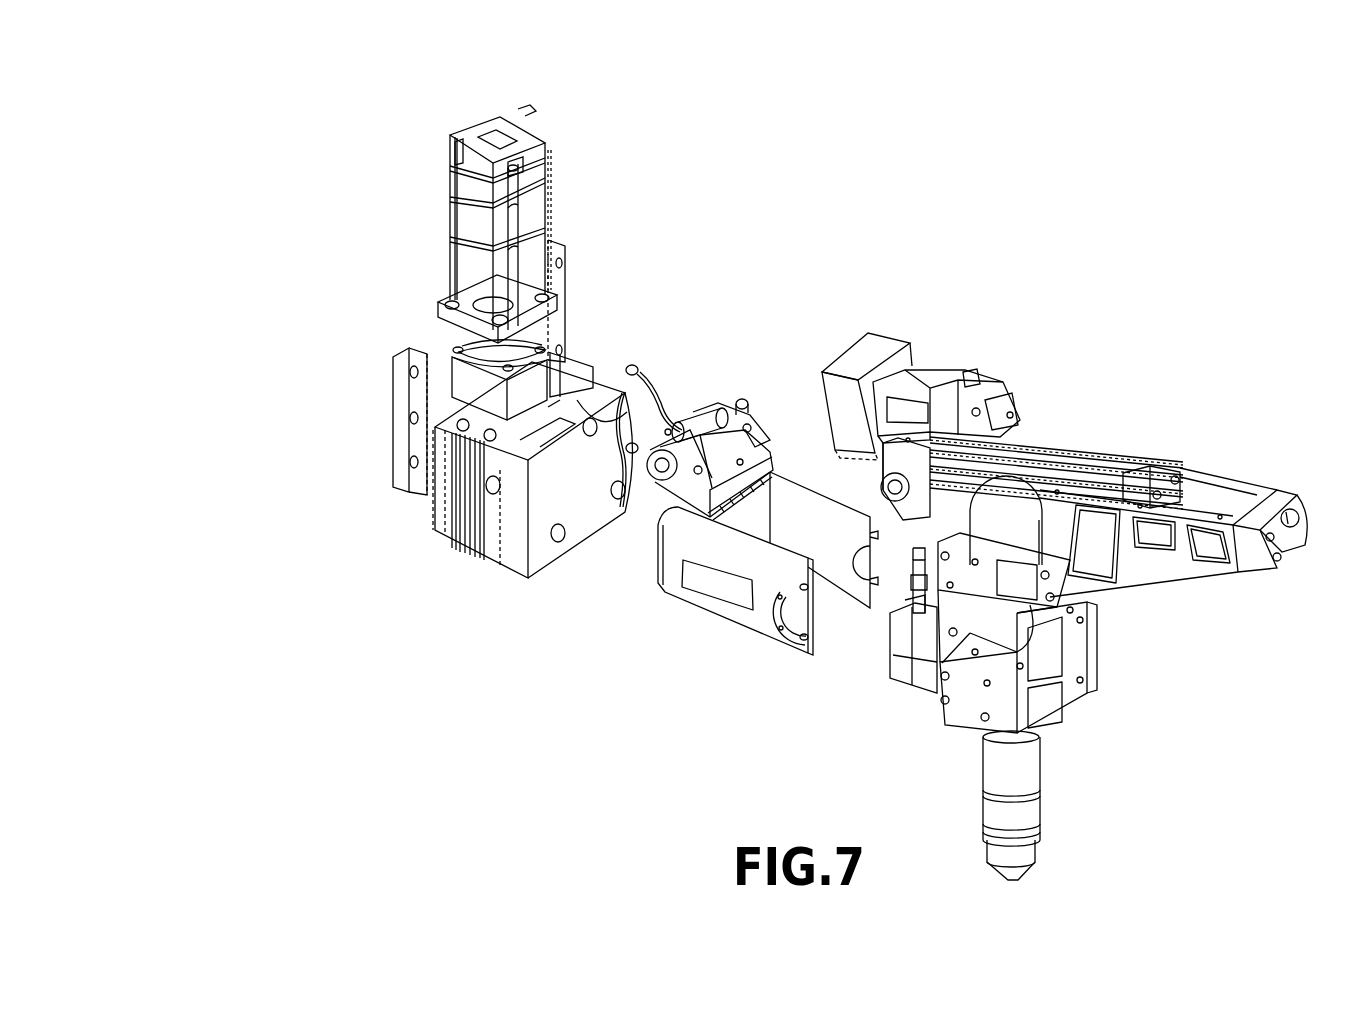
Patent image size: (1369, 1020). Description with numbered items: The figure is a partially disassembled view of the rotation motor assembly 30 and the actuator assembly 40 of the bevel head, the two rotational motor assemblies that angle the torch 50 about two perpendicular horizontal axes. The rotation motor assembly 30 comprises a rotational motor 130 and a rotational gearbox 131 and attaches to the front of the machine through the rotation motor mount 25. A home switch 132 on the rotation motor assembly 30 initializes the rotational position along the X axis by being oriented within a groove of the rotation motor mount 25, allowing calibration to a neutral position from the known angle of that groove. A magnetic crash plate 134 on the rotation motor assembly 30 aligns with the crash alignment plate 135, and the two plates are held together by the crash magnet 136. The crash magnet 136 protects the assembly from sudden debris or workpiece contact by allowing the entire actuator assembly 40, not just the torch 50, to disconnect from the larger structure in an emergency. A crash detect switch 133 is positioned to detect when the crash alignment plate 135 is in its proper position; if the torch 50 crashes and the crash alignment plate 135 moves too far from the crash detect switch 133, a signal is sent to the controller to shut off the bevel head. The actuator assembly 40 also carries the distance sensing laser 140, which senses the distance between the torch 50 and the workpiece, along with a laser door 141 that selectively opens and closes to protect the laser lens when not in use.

The rotation motor mount 25 is at (398, 402).
The rotation motor assembly 30 is at (257, 100).
The actuator assembly 40 is at (1157, 343).
The torch 50 is at (1018, 778).
The rotational motor 130 is at (538, 207).
The rotational gearbox 131 is at (465, 385).
The home switch 132 is at (567, 360).
The crash detect switch 133 is at (672, 385).
The magnetic crash plate 134 is at (517, 550).
The crash alignment plate 135 is at (660, 587).
The crash magnet 136 is at (660, 540).
The distance sensing laser 140 is at (903, 653).
The laser door 141 is at (917, 697).